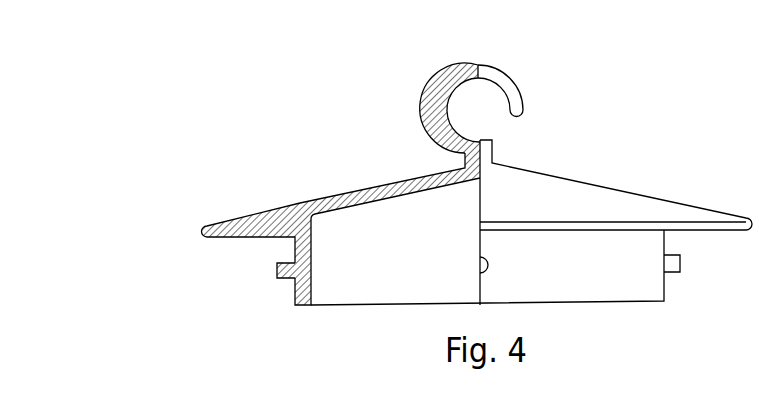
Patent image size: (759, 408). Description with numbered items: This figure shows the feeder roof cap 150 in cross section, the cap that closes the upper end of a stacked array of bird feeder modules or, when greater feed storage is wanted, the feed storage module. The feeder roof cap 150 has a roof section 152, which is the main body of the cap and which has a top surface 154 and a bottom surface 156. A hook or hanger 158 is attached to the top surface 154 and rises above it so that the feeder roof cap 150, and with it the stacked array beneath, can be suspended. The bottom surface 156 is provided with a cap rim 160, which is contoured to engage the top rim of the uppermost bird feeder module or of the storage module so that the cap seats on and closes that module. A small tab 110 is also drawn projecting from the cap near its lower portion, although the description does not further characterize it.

The feeder roof cap 150 is at (333, 168).
The roof section 152 is at (219, 203).
The top surface 154 is at (302, 203).
The bottom surface 156 is at (248, 238).
The locking tab 110 is at (274, 270).
The hook or hanger 158 is at (527, 80).
The cap rim 160 is at (667, 288).